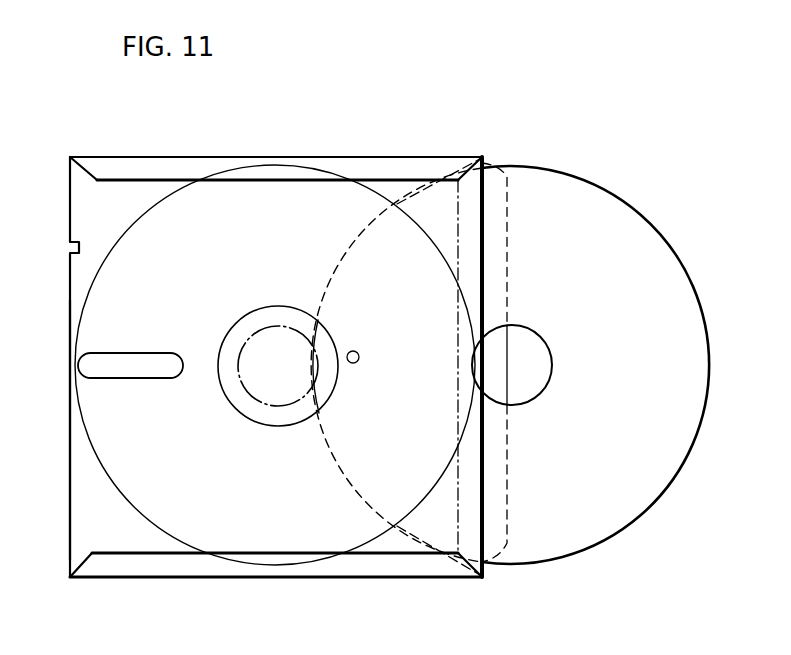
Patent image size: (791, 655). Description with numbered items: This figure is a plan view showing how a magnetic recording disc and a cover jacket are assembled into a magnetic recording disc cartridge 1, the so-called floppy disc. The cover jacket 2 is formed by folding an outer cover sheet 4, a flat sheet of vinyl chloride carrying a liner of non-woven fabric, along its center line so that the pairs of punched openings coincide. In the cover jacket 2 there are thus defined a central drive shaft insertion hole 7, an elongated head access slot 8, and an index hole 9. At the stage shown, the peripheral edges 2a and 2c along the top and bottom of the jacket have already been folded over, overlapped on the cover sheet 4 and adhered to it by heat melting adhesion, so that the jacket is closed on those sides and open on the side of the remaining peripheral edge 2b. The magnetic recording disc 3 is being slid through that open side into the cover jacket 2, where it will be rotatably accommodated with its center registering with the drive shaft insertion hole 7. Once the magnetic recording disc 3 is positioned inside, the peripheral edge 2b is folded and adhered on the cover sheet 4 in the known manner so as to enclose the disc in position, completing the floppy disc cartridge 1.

The magnetic recording disc cartridge 1 is at (38, 277).
The cover jacket 2 is at (86, 213).
The peripheral edge 2a is at (232, 164).
The peripheral edge 2b is at (497, 183).
The peripheral edge 2c is at (166, 566).
The magnetic recording disc 3 is at (702, 340).
The outer cover sheet 4 is at (80, 512).
The drive shaft insertion hole 7 is at (237, 328).
The head access slot 8 is at (126, 356).
The index hole 9 is at (358, 352).